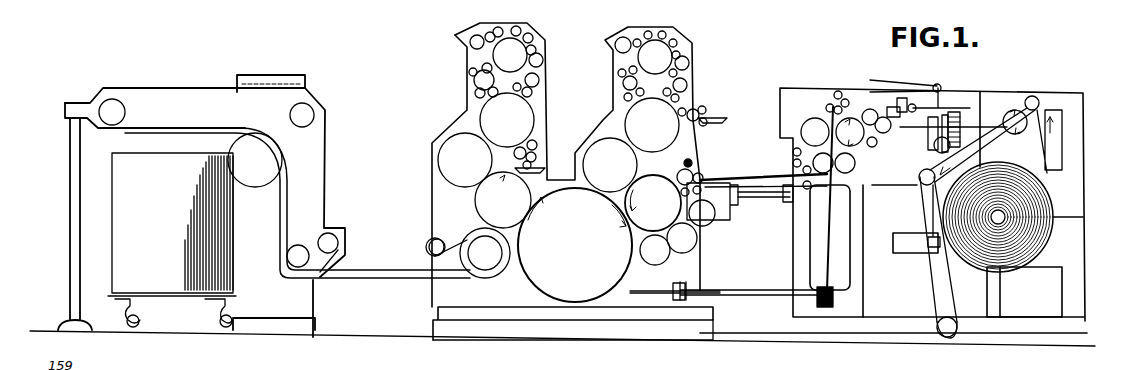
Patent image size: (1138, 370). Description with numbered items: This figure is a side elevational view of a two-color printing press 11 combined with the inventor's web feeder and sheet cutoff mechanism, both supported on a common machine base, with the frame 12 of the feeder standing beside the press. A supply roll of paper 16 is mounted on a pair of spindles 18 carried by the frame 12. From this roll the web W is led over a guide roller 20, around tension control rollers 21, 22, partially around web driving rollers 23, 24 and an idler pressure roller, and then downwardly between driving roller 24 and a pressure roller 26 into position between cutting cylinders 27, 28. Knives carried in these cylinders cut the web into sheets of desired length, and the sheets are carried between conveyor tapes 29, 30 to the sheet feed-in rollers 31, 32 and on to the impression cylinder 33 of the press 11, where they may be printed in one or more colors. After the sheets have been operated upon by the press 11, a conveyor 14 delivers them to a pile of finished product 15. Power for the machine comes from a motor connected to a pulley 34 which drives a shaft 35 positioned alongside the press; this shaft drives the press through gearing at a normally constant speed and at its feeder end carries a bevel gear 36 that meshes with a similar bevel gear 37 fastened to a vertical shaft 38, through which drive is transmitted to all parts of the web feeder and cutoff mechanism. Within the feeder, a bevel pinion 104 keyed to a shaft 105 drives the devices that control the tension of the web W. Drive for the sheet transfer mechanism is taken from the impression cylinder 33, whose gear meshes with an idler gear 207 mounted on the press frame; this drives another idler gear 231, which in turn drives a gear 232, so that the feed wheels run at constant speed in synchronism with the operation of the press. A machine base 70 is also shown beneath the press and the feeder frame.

The printing press 11 is at (690, 266).
The frame 12 is at (1072, 257).
The conveyor 14 is at (388, 263).
The pile of finished product 15 is at (222, 233).
The supply roll of paper 16 is at (1040, 227).
The spindles 18 is at (1007, 217).
The guide roller 20 is at (1038, 98).
The tension control roller 21 is at (934, 125).
The tension control roller 22 is at (939, 87).
The web driving roller 23 is at (839, 92).
The web driving roller 24 is at (833, 106).
The pressure roller 26 is at (827, 110).
The cutting cylinder 27 is at (852, 175).
The cutting cylinder 28 is at (808, 128).
The conveyor tape 29 is at (748, 171).
The conveyor tape 30 is at (780, 172).
The sheet feed-in roller 31 is at (693, 142).
The sheet feed-in roller 32 is at (653, 203).
The impression cylinder 33 is at (649, 187).
The pulley 34 is at (677, 300).
The shaft 35 is at (768, 292).
The bevel gear 36 is at (812, 303).
The bevel gear 37 is at (833, 286).
The vertical shaft 38 is at (827, 236).
The base 70 is at (696, 340).
The bevel pinion 104 is at (899, 147).
The shaft 105 is at (928, 140).
The idler gear 207 is at (650, 257).
The idler gear 231 is at (683, 250).
The gear 232 is at (728, 225).
The web W is at (1047, 152).